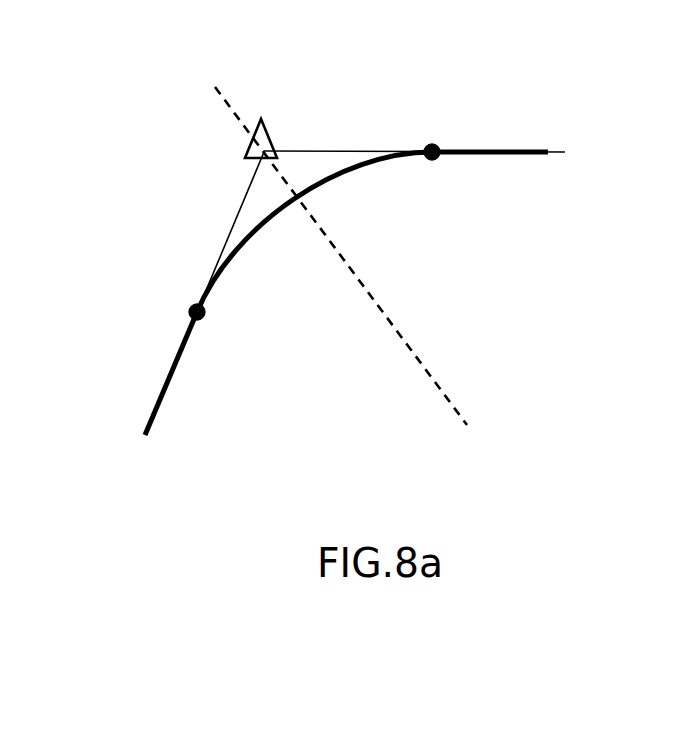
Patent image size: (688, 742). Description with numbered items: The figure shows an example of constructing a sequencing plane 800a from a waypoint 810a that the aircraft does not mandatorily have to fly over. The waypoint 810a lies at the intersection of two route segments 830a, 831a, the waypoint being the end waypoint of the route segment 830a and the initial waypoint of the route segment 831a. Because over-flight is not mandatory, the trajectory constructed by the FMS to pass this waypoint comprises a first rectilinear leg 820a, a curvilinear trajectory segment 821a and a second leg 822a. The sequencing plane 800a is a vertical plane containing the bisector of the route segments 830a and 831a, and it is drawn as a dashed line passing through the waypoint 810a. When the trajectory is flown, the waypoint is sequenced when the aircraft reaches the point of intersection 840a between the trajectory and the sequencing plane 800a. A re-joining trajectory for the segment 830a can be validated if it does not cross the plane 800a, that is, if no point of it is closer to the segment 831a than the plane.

The sequencing plane 800a is at (435, 393).
The waypoint 810a is at (248, 139).
The first rectilinear leg 820a is at (157, 404).
The curvilinear trajectory segment 821a is at (228, 268).
The second leg 822a is at (508, 155).
The route segment 830a is at (230, 228).
The route segment 831a is at (346, 151).
The point of intersection 840a is at (297, 197).